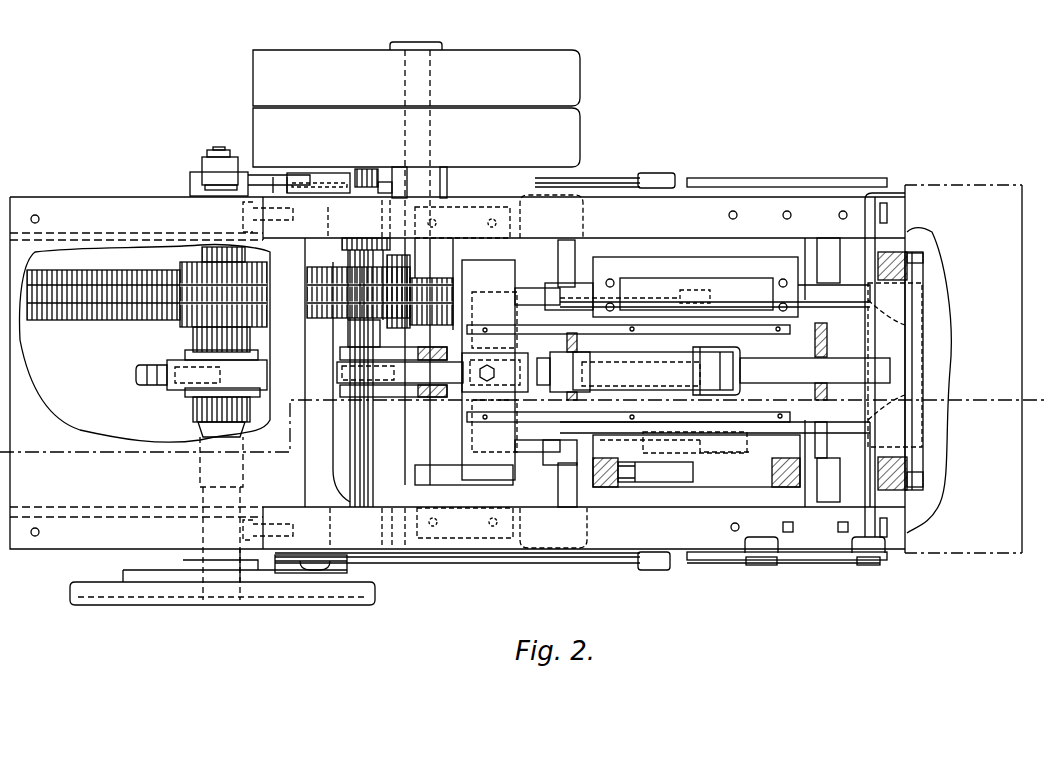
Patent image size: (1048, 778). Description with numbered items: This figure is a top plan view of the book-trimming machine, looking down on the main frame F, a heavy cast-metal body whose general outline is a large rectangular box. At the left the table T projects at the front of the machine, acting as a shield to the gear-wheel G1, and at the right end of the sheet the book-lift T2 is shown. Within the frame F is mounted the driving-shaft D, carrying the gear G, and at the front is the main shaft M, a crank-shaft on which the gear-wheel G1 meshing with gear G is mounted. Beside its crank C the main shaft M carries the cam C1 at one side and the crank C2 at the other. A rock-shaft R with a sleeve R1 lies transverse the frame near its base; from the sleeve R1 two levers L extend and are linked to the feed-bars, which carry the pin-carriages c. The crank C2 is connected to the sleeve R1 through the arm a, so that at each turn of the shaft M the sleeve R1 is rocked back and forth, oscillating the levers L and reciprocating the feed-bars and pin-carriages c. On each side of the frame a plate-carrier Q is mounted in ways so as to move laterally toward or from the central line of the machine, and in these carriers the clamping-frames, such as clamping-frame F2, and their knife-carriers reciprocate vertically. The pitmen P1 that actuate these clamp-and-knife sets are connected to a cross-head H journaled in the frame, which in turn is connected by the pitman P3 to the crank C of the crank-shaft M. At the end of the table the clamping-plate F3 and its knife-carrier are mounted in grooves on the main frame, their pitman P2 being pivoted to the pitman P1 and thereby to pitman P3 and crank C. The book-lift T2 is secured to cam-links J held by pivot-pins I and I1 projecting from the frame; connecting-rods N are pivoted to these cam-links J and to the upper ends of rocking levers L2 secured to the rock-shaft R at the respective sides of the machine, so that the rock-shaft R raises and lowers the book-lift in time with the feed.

The driving-shaft D is at (422, 48).
The crank C2 is at (205, 173).
The arm a is at (322, 188).
The rock-shaft R is at (370, 184).
The connecting-rods N is at (607, 172).
The cam-links J is at (848, 172).
The gear G is at (442, 272).
The main frame F is at (574, 370).
The plate-carrier Q is at (822, 372).
The clamping-plate F3 is at (879, 268).
The gear-wheel G1 is at (108, 316).
The crank C is at (185, 356).
The main shaft M is at (197, 338).
The pitman P3 is at (299, 374).
The pitman P1 is at (530, 296).
The cross-head H is at (518, 356).
The levers L is at (437, 353).
The pitman P2 is at (731, 371).
The pin-carriages c is at (665, 328).
The clamping-frame F2 is at (786, 488).
The table T is at (457, 373).
The book-lift T2 is at (963, 369).
The sleeve R1 is at (367, 472).
The pivot-pin I is at (755, 556).
The pivot-pin I1 is at (856, 556).
The cam C1 is at (265, 590).
The rocking levers L2 is at (293, 569).